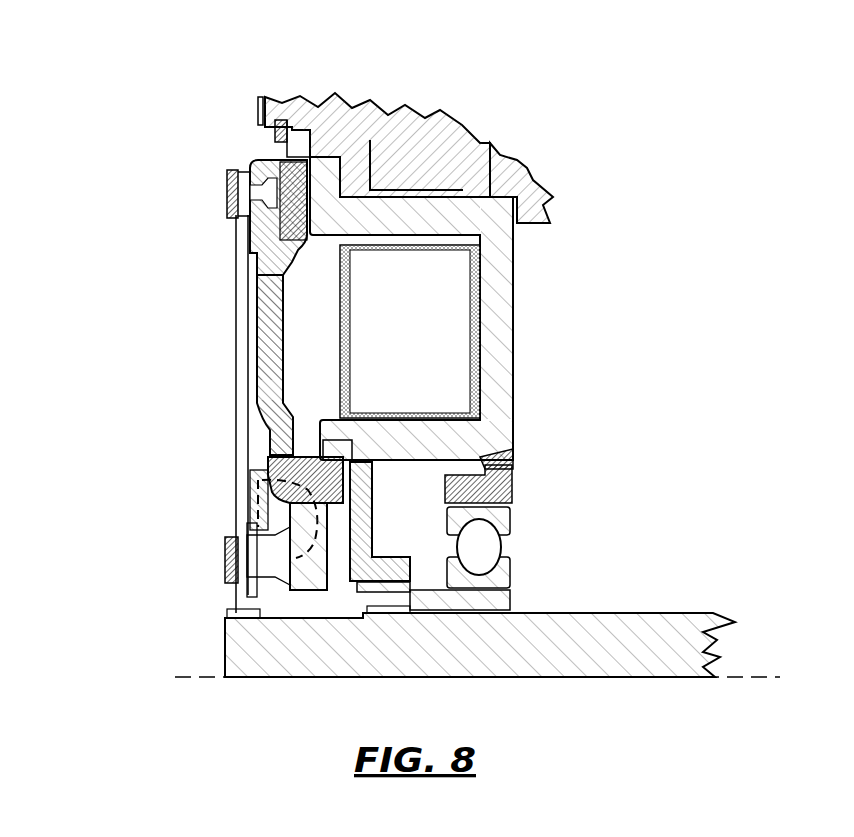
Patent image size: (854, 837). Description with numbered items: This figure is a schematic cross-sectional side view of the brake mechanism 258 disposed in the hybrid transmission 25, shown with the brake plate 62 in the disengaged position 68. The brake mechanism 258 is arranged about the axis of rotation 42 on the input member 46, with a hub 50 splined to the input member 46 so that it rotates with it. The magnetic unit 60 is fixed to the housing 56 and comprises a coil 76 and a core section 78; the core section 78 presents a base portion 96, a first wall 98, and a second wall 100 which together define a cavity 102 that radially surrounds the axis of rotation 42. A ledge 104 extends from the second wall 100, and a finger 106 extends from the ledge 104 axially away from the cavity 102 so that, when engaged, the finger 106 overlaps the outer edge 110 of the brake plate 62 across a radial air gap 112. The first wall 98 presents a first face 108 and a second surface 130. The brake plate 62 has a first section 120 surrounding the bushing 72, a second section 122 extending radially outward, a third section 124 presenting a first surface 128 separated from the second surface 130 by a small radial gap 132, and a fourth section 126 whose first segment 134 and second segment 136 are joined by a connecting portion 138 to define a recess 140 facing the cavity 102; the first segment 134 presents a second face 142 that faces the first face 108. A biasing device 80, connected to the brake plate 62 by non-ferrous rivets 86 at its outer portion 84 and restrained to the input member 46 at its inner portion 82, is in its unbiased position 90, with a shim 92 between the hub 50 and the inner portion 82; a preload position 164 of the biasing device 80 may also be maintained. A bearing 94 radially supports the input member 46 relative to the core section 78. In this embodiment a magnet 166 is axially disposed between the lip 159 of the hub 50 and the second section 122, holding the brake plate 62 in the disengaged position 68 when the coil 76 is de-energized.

The hybrid transmission 25 is at (210, 113).
The brake mechanism 258 is at (245, 130).
The housing 56 is at (305, 148).
The outer edge 110 is at (293, 154).
The finger 106 is at (302, 125).
The radial air gap 112 is at (325, 185).
The ledge 104 is at (413, 190).
The second wall 100 is at (423, 227).
The cavity 102 is at (449, 240).
The unbiased position 90 is at (155, 182).
The disengaged position 68 is at (220, 140).
The preload position 164 is at (233, 169).
The rivets 86 is at (247, 195).
The outer portion 84 is at (245, 213).
The second segment 136 is at (293, 222).
The recess 140 is at (317, 287).
The brake plate 62 is at (273, 315).
The connecting portion 138 is at (277, 333).
The biasing device 80 is at (250, 382).
The fourth section 126 is at (277, 415).
The first segment 134 is at (282, 447).
The first face 108 is at (321, 453).
The third section 124 is at (313, 475).
The shim 92 is at (274, 556).
The inner portion 82 is at (247, 545).
The input member 46 is at (227, 637).
The axis of rotation 42 is at (200, 677).
The lip 159 is at (258, 600).
The hub 50 is at (277, 600).
The magnet 166 is at (308, 582).
The second surface 130 is at (343, 462).
The bushing 72 is at (380, 592).
The first section 120 is at (432, 612).
The second face 142 is at (299, 445).
The first surface 128 is at (358, 455).
The coil 76 is at (410, 331).
The magnetic unit 60 is at (500, 305).
The core section 78 is at (500, 355).
The base portion 96 is at (498, 402).
The first wall 98 is at (433, 446).
The small radial gap 132 is at (358, 468).
The second section 122 is at (365, 540).
The bearing 94 is at (477, 560).